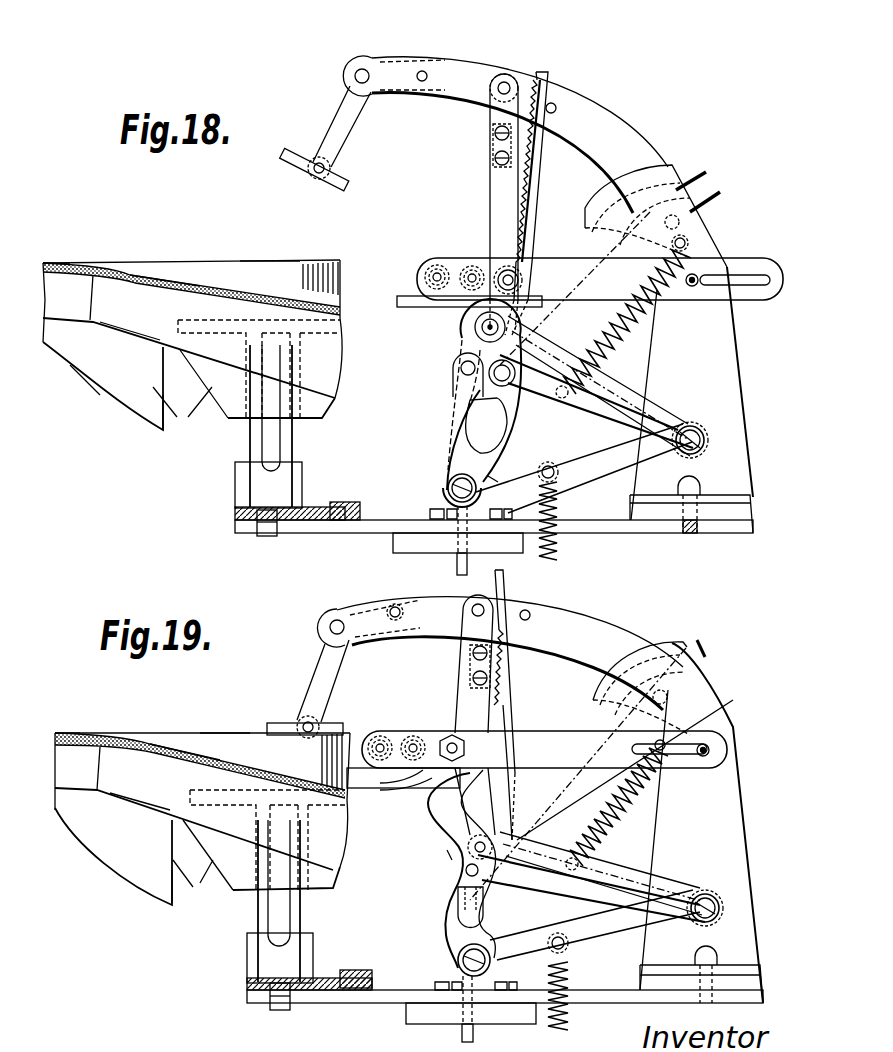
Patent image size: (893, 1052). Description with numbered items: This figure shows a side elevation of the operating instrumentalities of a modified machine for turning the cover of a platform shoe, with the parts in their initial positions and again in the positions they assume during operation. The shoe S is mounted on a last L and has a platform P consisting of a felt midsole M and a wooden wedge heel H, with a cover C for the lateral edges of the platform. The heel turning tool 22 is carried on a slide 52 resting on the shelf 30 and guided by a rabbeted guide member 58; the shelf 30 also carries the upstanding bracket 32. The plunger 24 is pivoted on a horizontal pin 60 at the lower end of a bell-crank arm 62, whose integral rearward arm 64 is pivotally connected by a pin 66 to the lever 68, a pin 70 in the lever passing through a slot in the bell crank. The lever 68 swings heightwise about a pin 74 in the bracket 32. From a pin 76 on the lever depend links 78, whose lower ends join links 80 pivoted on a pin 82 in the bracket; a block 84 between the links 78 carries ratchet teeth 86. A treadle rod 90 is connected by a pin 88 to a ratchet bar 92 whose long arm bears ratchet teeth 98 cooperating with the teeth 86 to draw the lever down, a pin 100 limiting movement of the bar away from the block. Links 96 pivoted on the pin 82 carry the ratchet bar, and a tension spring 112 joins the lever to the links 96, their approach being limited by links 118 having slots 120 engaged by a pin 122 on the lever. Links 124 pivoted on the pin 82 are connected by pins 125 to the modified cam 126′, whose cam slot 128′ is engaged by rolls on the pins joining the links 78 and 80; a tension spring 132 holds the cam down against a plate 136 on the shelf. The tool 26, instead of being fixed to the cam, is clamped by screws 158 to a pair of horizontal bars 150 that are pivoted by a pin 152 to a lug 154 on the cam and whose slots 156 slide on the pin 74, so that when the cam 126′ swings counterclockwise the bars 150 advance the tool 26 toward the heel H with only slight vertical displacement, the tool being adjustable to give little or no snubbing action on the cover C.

In FIG. 18, the heel turning tool 22 is at (230, 430).
In FIG. 19, the heel turning tool 22 is at (230, 916).
In FIG. 18, the plunger 24 is at (288, 158).
In FIG. 19, the plunger 24 is at (278, 725).
In FIG. 18, the tool 26 is at (423, 307).
In FIG. 19, the tool 26 is at (365, 788).
In FIG. 18, the shelf 30 is at (392, 520).
In FIG. 19, the shelf 30 is at (613, 990).
In FIG. 18, the bracket 32 is at (730, 385).
In FIG. 19, the bracket 32 is at (701, 823).
In FIG. 18, the slide 52 is at (308, 508).
In FIG. 19, the slide 52 is at (315, 980).
In FIG. 18, the rabbeted guide member 58 is at (355, 504).
In FIG. 18, the horizontal pin 60 is at (320, 175).
In FIG. 18, the bell-crank arm 62 is at (345, 133).
In FIG. 19, the bell-crank arm 62 is at (328, 680).
In FIG. 18, the arm 64 is at (405, 58).
In FIG. 19, the arm 64 is at (369, 623).
In FIG. 18, the horizontal pin 66 is at (427, 76).
In FIG. 18, the lever 68 is at (610, 132).
In FIG. 19, the lever 68 is at (585, 627).
In FIG. 18, the horizontal pin 70 is at (358, 72).
In FIG. 18, the horizontal pin 74 is at (698, 276).
In FIG. 19, the horizontal pin 74 is at (718, 752).
In FIG. 18, the pin 76 is at (506, 82).
In FIG. 18, the links 78 is at (492, 205).
In FIG. 19, the links 78 is at (475, 715).
In FIG. 18, the links 80 is at (605, 375).
In FIG. 19, the links 80 is at (622, 868).
In FIG. 18, the pin 82 is at (690, 450).
In FIG. 19, the pin 82 is at (705, 920).
In FIG. 18, the block 84 is at (498, 130).
In FIG. 18, the ratchet teeth 86 is at (496, 158).
In FIG. 18, the pin 88 is at (462, 368).
In FIG. 19, the pin 88 is at (472, 870).
In FIG. 18, the treadle rod 90 is at (455, 558).
In FIG. 19, the treadle rod 90 is at (471, 1009).
In FIG. 18, the ratchet bar 92 is at (548, 73).
In FIG. 19, the ratchet bar 92 is at (504, 705).
In FIG. 18, the links 96 is at (590, 412).
In FIG. 19, the links 96 is at (548, 878).
In FIG. 18, the ratchet teeth 98 is at (530, 150).
In FIG. 18, the pin 100 is at (556, 106).
In FIG. 19, the pin 100 is at (528, 612).
In FIG. 18, the tension spring 112 is at (640, 316).
In FIG. 19, the tension spring 112 is at (620, 818).
In FIG. 18, the links 118 is at (605, 252).
In FIG. 19, the links 118 is at (557, 795).
In FIG. 18, the longitudinal slots 120 is at (706, 185).
In FIG. 19, the longitudinal slots 120 is at (649, 687).
In FIG. 18, the pin 122 is at (680, 222).
In FIG. 18, the links 124 is at (583, 480).
In FIG. 19, the links 124 is at (595, 925).
In FIG. 18, the pins 125 is at (490, 473).
In FIG. 19, the pins 125 is at (458, 962).
In FIG. 18, the cam 126′ is at (455, 418).
In FIG. 19, the cam 126′ is at (455, 848).
In FIG. 18, the cam slot 128′ is at (481, 426).
In FIG. 19, the cam slot 128′ is at (445, 798).
In FIG. 18, the tension spring 132 is at (565, 542).
In FIG. 19, the tension spring 132 is at (548, 1006).
In FIG. 18, the plate 136 is at (450, 500).
In FIG. 18, the bars 150 is at (740, 258).
In FIG. 19, the bars 150 is at (540, 732).
In FIG. 18, the pin 152 is at (510, 278).
In FIG. 19, the pin 152 is at (453, 742).
In FIG. 19, the lug 154 is at (405, 788).
In FIG. 18, the longitudinal slots 156 is at (745, 282).
In FIG. 19, the longitudinal slots 156 is at (693, 740).
In FIG. 18, the clamping screws 158 is at (470, 272).
In FIG. 19, the clamping screws 158 is at (413, 745).
In FIG. 18, the felt midsole M is at (65, 262).
In FIG. 19, the felt midsole M is at (70, 733).
In FIG. 18, the platform P is at (158, 275).
In FIG. 19, the platform P is at (170, 745).
In FIG. 18, the wedge heel H is at (260, 268).
In FIG. 19, the wedge heel H is at (218, 740).
In FIG. 18, the cover C is at (130, 328).
In FIG. 19, the cover C is at (143, 797).
In FIG. 18, the last L is at (165, 412).
In FIG. 19, the last L is at (173, 880).
In FIG. 18, the shoe S is at (87, 398).